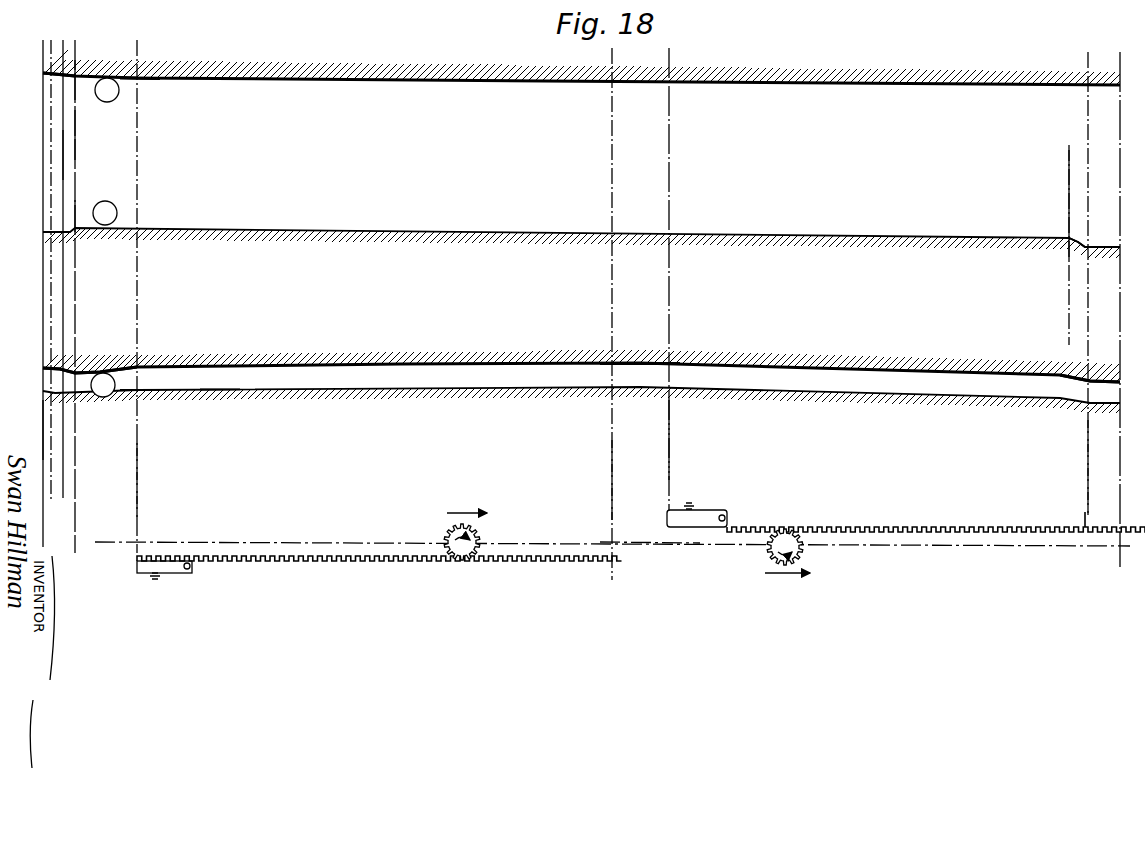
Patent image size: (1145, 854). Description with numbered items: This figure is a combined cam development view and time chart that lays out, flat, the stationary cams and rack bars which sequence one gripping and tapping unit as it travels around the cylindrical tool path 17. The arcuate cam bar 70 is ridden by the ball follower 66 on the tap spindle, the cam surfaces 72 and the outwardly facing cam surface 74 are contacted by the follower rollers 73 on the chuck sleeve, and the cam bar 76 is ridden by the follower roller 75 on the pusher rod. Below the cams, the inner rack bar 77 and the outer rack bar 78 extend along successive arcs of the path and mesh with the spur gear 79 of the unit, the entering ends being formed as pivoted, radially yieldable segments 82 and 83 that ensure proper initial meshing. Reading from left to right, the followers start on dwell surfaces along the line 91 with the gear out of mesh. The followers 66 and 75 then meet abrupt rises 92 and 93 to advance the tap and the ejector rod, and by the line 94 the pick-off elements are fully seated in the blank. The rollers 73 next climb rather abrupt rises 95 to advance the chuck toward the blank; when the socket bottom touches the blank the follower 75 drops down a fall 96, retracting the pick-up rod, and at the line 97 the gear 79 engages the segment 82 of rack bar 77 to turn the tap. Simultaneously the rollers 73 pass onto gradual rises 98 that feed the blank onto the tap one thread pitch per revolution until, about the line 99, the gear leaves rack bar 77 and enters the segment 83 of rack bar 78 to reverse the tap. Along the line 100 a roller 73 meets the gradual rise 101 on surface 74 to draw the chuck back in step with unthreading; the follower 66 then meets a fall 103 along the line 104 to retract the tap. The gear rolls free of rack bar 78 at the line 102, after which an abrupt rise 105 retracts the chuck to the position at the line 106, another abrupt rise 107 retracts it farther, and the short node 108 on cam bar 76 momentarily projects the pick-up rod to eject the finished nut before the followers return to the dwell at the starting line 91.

The cylindrical tool path 17 is at (657, 545).
The follower 66 is at (110, 203).
The cam bar 70 is at (210, 228).
The cam surfaces 72 is at (257, 390).
The follower rollers 73 is at (105, 372).
The cam surface 74 is at (638, 364).
The follower roller 75 is at (113, 100).
The cam bar 76 is at (268, 76).
The rack bar 77 is at (272, 559).
The rack bar 78 is at (880, 534).
The gear means 79 is at (455, 530).
The segment 82 is at (137, 565).
The segment 83 is at (701, 512).
The line 91 is at (63, 155).
The abrupt rise 92 is at (68, 228).
The abrupt rise 93 is at (76, 82).
The line 94 is at (76, 136).
The abrupt rises 95 is at (142, 380).
The fall 96 is at (142, 78).
The line 97 is at (137, 483).
The gradual rises 98 is at (214, 390).
The line 99 is at (612, 478).
The line 100 is at (669, 442).
The gradual rise 101 is at (762, 363).
The line 102 is at (1088, 465).
The fall 103 is at (1075, 235).
The line 104 is at (1068, 206).
The abrupt rise 105 is at (1090, 381).
The line 106 is at (48, 437).
The abrupt rise 107 is at (43, 371).
The short node 108 is at (43, 76).